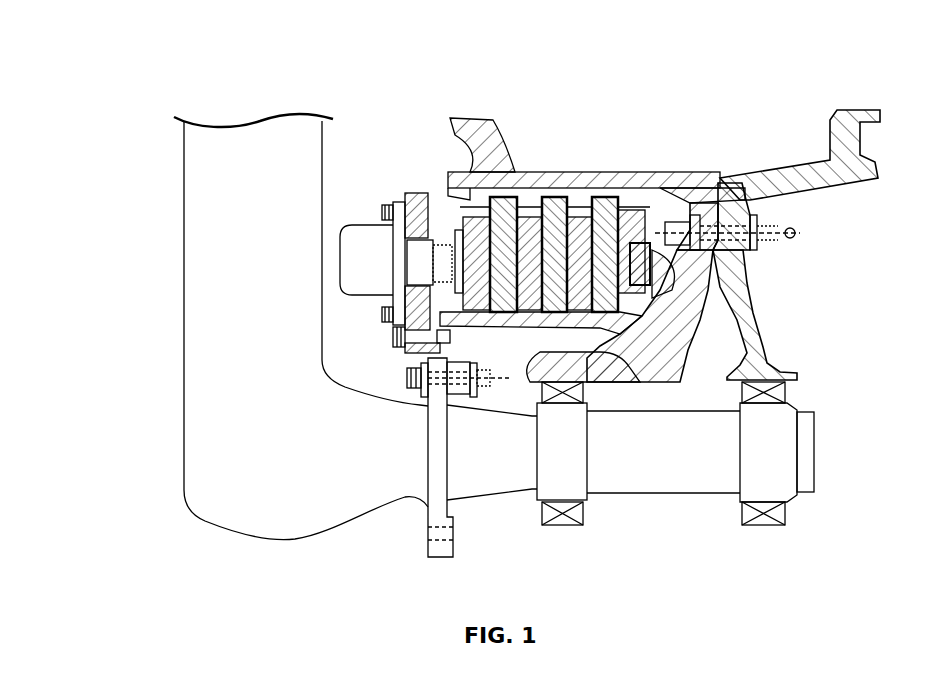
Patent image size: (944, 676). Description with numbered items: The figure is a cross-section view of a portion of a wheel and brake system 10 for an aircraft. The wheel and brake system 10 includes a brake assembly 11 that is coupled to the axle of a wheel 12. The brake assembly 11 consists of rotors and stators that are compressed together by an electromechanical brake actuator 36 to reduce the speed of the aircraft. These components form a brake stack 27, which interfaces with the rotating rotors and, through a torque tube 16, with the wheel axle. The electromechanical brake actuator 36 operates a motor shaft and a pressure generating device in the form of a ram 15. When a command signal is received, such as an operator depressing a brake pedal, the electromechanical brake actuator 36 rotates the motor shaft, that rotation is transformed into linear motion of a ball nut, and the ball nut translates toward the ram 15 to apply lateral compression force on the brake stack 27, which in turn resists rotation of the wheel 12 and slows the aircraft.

The wheel and brake system 10 is at (120, 78).
The brake assembly 11 is at (387, 170).
The wheel 12 is at (766, 351).
The ram 15 is at (462, 232).
The torque tube 16 is at (625, 332).
The brake stack 27 is at (644, 203).
The electromechanical brake actuator 36 is at (367, 235).